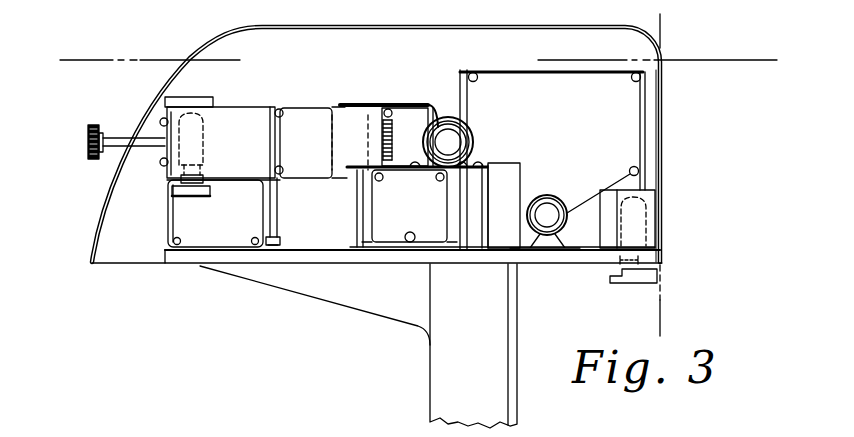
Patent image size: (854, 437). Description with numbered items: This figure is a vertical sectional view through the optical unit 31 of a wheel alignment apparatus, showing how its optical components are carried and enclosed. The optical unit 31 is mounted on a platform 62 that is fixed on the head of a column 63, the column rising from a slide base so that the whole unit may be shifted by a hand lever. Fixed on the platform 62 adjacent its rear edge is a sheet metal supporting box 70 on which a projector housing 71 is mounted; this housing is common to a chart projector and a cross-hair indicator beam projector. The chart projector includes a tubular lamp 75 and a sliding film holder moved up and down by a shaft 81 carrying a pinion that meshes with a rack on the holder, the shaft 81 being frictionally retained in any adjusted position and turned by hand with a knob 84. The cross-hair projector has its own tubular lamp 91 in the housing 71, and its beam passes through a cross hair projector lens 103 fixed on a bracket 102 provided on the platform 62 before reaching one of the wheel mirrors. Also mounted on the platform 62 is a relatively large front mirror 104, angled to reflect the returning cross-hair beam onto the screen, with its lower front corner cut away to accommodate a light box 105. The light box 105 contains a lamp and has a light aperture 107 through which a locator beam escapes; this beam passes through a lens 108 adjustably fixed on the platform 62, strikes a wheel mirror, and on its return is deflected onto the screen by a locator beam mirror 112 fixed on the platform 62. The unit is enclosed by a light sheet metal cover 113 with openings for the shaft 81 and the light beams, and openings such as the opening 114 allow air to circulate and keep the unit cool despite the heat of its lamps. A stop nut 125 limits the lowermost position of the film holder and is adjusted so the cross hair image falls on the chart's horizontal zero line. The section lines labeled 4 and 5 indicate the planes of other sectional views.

The optical unit 31 is at (86, 269).
The section line 5- 5 is at (763, 58).
The section line 4- 4 is at (666, 318).
The sheet metal cover 113 is at (663, 113).
The platform 62 is at (190, 265).
The opening 114 is at (118, 256).
The column 63 is at (430, 376).
The knob 84 is at (90, 127).
The shaft 81 is at (134, 148).
The projector housing 71 is at (229, 106).
The T-8 lamp 91 is at (204, 133).
The sheet metal supporting box 70 is at (168, 229).
The stop nut 125 is at (282, 238).
The locator beam mirror 112 is at (392, 228).
The front mirror 104 is at (517, 71).
The bracket 102 is at (486, 162).
The cross hair projector lens 103 is at (472, 129).
The lens 108 is at (549, 195).
The light box 105 is at (652, 197).
The light aperture 107 is at (624, 228).
The T-8 lamp 75 is at (648, 218).